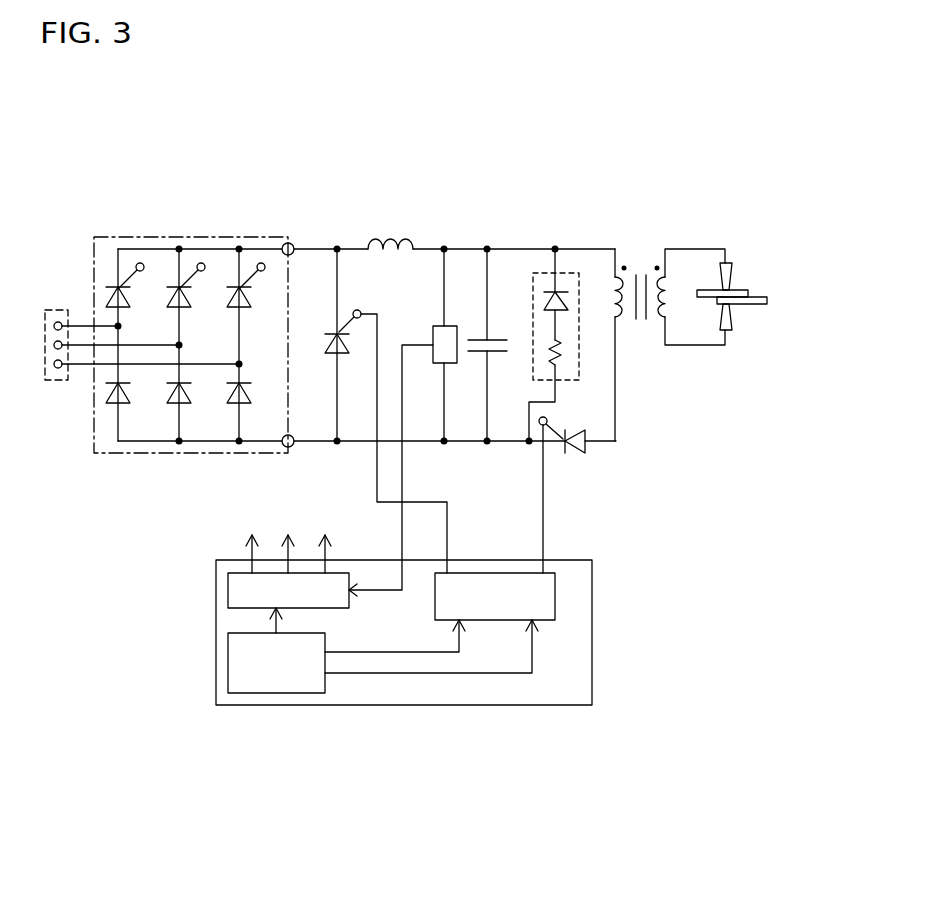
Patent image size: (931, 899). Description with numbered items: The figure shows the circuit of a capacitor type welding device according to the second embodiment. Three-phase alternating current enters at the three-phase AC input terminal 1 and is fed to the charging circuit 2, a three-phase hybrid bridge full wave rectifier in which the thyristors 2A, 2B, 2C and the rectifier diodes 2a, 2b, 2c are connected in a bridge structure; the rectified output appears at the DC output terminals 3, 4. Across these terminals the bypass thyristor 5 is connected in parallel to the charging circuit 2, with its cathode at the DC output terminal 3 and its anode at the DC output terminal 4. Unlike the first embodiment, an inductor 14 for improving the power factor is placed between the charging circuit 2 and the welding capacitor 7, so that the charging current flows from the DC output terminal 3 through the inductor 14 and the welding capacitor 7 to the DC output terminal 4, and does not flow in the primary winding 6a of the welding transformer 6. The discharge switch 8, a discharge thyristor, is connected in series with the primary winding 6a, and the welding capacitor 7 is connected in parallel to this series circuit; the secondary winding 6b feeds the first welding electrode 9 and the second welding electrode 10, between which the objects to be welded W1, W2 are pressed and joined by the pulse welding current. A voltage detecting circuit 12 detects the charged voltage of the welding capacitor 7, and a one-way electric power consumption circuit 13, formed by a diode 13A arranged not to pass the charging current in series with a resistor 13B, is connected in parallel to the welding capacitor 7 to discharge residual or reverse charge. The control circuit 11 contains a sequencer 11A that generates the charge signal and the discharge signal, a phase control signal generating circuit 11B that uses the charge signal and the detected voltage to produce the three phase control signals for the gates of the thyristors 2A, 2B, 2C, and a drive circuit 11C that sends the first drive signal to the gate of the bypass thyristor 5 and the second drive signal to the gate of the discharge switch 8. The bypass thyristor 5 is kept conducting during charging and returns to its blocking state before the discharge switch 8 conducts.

The three-phase AC input terminal 1 is at (56, 308).
The charging circuit 2 is at (191, 336).
The thyristor 2A is at (110, 287).
The thyristor 2B is at (170, 287).
The thyristor 2C is at (229, 287).
The rectifier diode 2a is at (110, 405).
The rectifier diode 2b is at (170, 405).
The rectifier diode 2c is at (228, 405).
The DC output terminal 3 is at (290, 243).
The DC output terminal 4 is at (290, 448).
The bypass thyristor 5 is at (345, 355).
The welding transformer 6 is at (661, 320).
The primary winding 6a is at (620, 280).
The secondary winding 6b is at (660, 282).
The welding capacitor 7 is at (500, 338).
The discharge switch 8 is at (567, 432).
The first welding electrode 9 is at (735, 268).
The second welding electrode 10 is at (732, 332).
The control circuit 11 is at (374, 639).
The sequencer 11A is at (228, 665).
The phase control signal generating circuit 11B is at (228, 597).
The drive circuit 11C is at (495, 585).
The voltage detecting circuit 12 is at (440, 326).
The one-way electric power consumption circuit 13 is at (578, 320).
The diode 13A is at (567, 290).
The resistor 13B is at (567, 348).
The inductor 14 is at (401, 238).
The object to be welded W1 is at (750, 292).
The object to be welded W2 is at (767, 304).